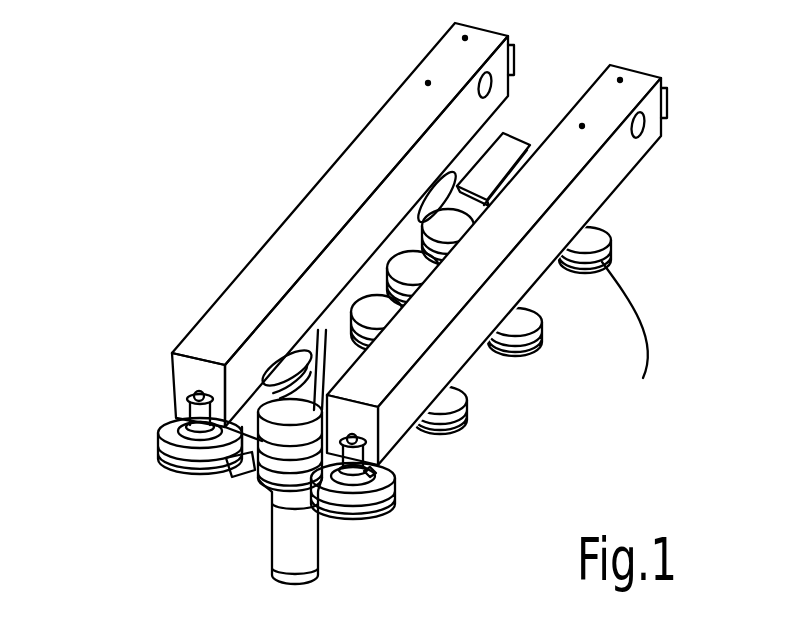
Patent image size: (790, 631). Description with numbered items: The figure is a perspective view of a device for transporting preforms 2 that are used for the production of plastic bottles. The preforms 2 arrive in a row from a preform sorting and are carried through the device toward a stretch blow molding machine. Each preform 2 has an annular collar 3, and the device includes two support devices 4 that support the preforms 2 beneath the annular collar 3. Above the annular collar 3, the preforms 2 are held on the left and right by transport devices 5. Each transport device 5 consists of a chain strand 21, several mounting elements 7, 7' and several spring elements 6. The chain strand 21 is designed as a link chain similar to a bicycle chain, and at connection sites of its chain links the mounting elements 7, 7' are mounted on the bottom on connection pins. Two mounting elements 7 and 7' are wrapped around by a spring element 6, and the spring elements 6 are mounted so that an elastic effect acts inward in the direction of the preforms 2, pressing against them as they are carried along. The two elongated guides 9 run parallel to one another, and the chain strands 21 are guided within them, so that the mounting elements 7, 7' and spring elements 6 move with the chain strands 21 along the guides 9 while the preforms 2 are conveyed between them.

The preform 2 is at (310, 552).
The annular collar 3 is at (253, 478).
The support device 4 is at (513, 140).
The transport device 5 is at (378, 473).
The spring element 6 is at (467, 410).
The mounting element 7 is at (451, 300).
The mounting element 7' is at (338, 418).
The guide 9 is at (430, 67).
The chain strand 21 is at (172, 352).